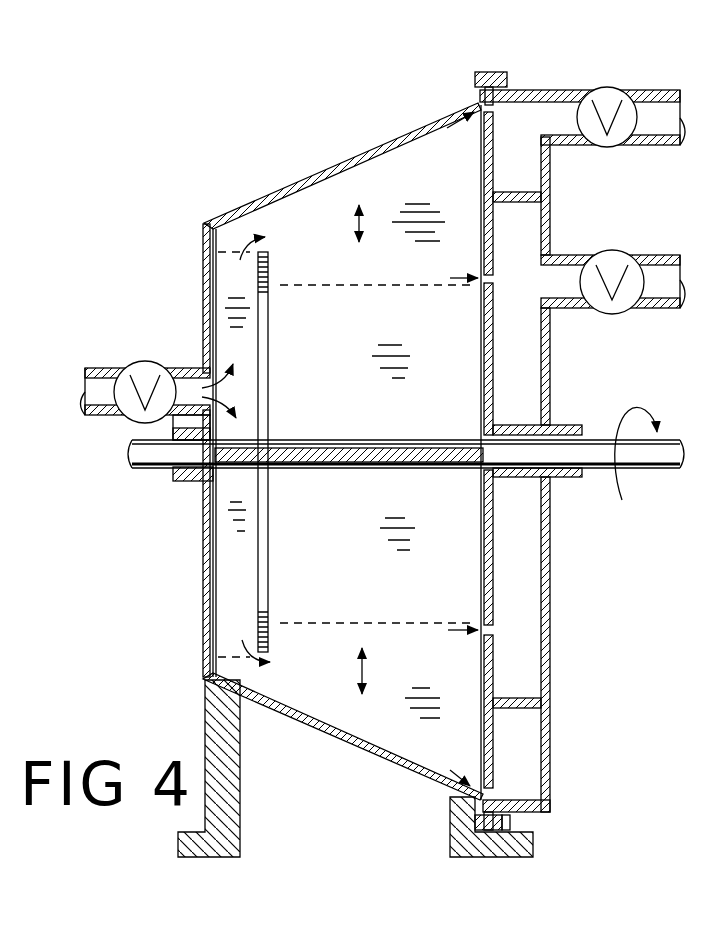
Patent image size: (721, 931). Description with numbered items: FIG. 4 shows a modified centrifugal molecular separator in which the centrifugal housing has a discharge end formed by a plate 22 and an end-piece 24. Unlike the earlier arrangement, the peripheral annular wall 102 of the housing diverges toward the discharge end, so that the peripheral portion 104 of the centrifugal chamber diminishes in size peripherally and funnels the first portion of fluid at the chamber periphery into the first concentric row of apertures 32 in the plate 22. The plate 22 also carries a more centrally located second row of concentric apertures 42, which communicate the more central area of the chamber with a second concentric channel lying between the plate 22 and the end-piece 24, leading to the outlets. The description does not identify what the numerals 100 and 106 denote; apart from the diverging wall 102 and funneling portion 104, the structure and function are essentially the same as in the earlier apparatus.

The plate 22 is at (489, 218).
The end-piece 24 is at (545, 537).
The first concentric row of apertures 32 is at (493, 107).
The second row of concentric apertures 42 is at (491, 630).
The tank side wall 100 is at (205, 284).
The peripheral annular wall 102 is at (301, 181).
The peripheral portion of the centrifugal chamber 104 is at (442, 130).
The baffle plate 106 is at (228, 250).